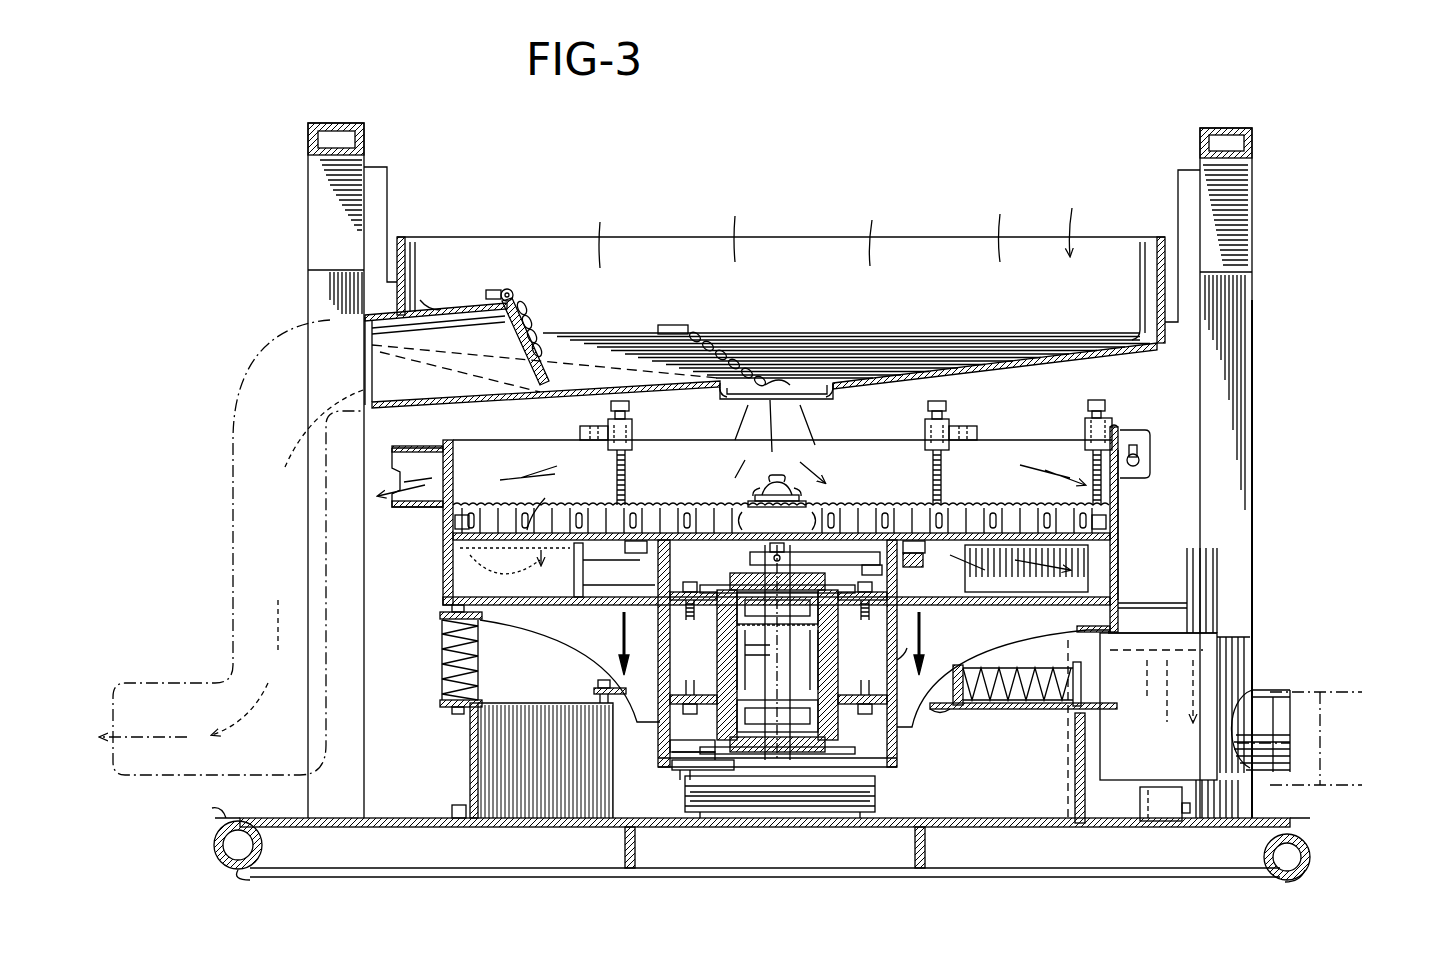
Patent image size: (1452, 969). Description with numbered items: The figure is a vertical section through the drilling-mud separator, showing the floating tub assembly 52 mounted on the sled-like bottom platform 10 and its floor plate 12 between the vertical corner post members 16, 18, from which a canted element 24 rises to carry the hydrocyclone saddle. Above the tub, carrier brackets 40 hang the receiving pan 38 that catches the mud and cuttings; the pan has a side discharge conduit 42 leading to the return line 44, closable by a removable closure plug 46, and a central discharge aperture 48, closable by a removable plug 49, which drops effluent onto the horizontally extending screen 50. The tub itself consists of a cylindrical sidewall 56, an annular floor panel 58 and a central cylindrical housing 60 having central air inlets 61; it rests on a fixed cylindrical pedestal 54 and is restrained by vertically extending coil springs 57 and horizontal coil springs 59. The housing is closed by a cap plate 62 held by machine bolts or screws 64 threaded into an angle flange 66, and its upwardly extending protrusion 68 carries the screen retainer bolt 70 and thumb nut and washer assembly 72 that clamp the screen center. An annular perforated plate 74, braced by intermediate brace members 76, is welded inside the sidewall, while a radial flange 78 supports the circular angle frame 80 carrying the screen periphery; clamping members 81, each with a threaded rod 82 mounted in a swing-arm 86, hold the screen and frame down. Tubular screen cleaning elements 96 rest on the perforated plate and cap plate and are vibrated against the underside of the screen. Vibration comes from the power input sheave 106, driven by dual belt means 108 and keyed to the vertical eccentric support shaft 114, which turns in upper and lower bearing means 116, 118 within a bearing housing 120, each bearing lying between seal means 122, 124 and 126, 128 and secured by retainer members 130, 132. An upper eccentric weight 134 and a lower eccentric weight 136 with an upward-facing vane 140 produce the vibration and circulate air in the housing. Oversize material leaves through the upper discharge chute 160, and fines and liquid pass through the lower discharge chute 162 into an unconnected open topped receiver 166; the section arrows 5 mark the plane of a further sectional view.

The section line 5- 5 is at (771, 643).
The sled-like bottom platform 10 is at (235, 818).
The floor plate 12 is at (1000, 818).
The vertical corner post member 16 is at (1252, 406).
The vertical corner post member 18 is at (355, 748).
The canted element 24 is at (1243, 222).
The receiving pan 38 is at (768, 308).
The carrier brackets 40 is at (385, 206).
The side discharge conduit 42 is at (368, 380).
The return line 44 is at (233, 466).
The removable closure plug 46 is at (548, 384).
The central discharge aperture 48 is at (818, 398).
The removable plug 49 is at (736, 398).
The screen 50 is at (658, 505).
The floating tub assembly 52 is at (1128, 512).
The cylindrical pedestal 54 is at (470, 753).
The cylindrical sidewall 56 is at (515, 442).
The vertically extending coil springs 57 is at (440, 666).
The annular floor panel 58 is at (522, 604).
The horizontal coil springs 59 is at (1046, 676).
The central cylindrical housing 60 is at (900, 751).
The central air inlets 61 is at (898, 662).
The cap plate 62 is at (650, 578).
The machine bolts or screws 64 is at (906, 541).
The angle flange 66 is at (635, 553).
The upwardly extending protrusion 68 is at (806, 514).
The screen retainer bolt 70 is at (740, 512).
The thumb nut and washer assembly 72 is at (770, 492).
The annular perforated plate 74 is at (525, 548).
The intermediate brace members 76 is at (572, 580).
The radial flange 78 is at (455, 532).
The circular angle frame 80 is at (781, 479).
The clamping members 81 is at (606, 408).
The threaded rod 82 is at (608, 462).
The swing-arm 86 is at (1132, 420).
The screen cleaning elements 96 is at (584, 512).
The power input sheave 106 is at (722, 832).
The dual belt means 108 is at (880, 777).
The vertical eccentric support shaft 114 is at (765, 568).
The upper bearing means 116 is at (838, 636).
The lower bearing means 118 is at (832, 722).
The bearing housing 120 is at (830, 656).
The seal means 122 is at (752, 576).
The seal means 124 is at (745, 650).
The seal means 126 is at (872, 698).
The seal means 128 is at (828, 749).
The retainer member 130 is at (712, 618).
The retainer member 132 is at (670, 744).
The upper eccentric weight 134 is at (858, 555).
The lower eccentric weight 136 is at (672, 778).
The vane 140 is at (659, 760).
The upper discharge chute 160 is at (410, 460).
The lower discharge chute 162 is at (1220, 578).
The open topped receiver 166 is at (1250, 665).